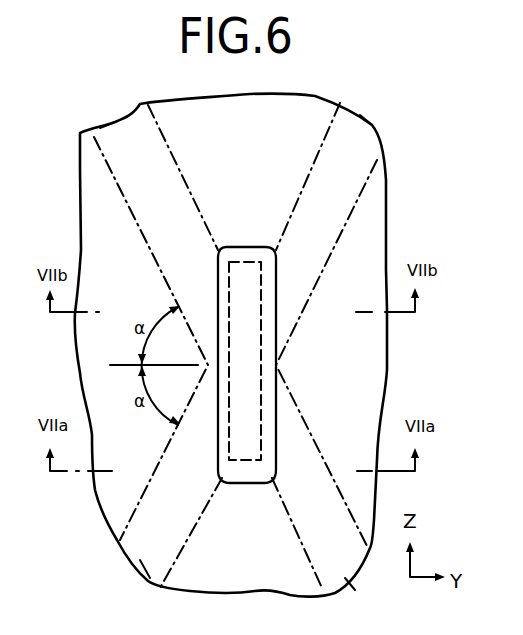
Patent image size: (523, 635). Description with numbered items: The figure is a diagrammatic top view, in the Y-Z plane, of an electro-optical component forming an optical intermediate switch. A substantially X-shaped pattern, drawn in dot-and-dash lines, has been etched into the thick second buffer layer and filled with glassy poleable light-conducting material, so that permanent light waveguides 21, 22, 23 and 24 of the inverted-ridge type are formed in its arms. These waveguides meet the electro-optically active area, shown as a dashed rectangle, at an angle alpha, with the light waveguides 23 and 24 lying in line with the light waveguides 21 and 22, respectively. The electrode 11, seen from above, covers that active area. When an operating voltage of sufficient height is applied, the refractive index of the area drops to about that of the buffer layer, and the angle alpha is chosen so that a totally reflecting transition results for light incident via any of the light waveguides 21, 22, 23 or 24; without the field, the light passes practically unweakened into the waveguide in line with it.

The electrode 11 is at (271, 303).
The light waveguide 21 is at (243, 263).
The light waveguide 22 is at (342, 555).
The light waveguide 23 is at (356, 142).
The light waveguide 24 is at (117, 143).